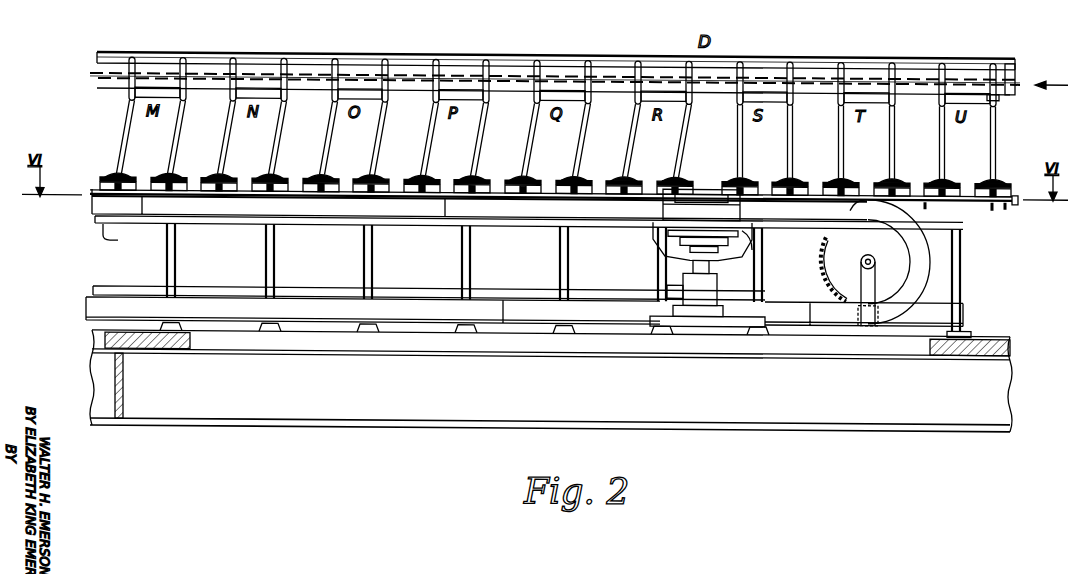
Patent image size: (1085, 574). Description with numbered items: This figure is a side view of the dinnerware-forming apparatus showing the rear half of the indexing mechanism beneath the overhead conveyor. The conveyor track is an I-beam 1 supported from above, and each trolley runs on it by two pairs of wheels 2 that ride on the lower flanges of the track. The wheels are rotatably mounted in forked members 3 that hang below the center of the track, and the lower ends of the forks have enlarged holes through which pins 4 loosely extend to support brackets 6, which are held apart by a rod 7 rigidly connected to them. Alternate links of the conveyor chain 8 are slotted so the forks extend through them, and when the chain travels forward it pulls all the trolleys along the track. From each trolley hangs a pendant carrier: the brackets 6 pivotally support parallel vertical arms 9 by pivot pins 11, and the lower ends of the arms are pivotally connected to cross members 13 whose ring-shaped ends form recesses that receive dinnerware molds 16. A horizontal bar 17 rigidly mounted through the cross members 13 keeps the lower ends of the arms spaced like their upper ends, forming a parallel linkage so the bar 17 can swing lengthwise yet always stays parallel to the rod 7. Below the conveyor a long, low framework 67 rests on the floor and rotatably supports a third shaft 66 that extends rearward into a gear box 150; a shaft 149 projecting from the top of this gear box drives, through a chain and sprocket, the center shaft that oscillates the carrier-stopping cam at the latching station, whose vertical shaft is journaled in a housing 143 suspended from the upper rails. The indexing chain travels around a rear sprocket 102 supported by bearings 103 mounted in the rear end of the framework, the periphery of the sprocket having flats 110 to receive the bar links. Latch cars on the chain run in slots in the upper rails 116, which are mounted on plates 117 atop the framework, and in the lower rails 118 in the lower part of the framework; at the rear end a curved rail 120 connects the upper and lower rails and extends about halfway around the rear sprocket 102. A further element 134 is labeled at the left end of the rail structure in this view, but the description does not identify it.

The I-beam track 1 is at (1006, 54).
The wheels 2 is at (935, 59).
The forked members 3 is at (1007, 68).
The pins 4 is at (130, 86).
The brackets 6 is at (997, 90).
The rod 7 is at (968, 91).
The conveyor chain 8 is at (92, 74).
The vertical arms 9 is at (995, 123).
The pivot pins 11 is at (132, 98).
The cross members 13 is at (994, 198).
The dinnerware molds 16 is at (1000, 175).
The horizontal bar 17 is at (952, 194).
The third shaft 66 is at (126, 286).
The framework 67 is at (112, 226).
The rear sprocket 102 is at (828, 276).
The bearings 103 is at (872, 291).
The flats 110 is at (823, 232).
The upper rails 116 is at (95, 203).
The plates 117 is at (93, 219).
The lower rails 118 is at (392, 312).
The rear curved rail 120 is at (924, 263).
The rail end plate 134 is at (95, 194).
The housing 143 is at (738, 257).
The shaft 149 is at (693, 257).
The gear box 150 is at (700, 292).